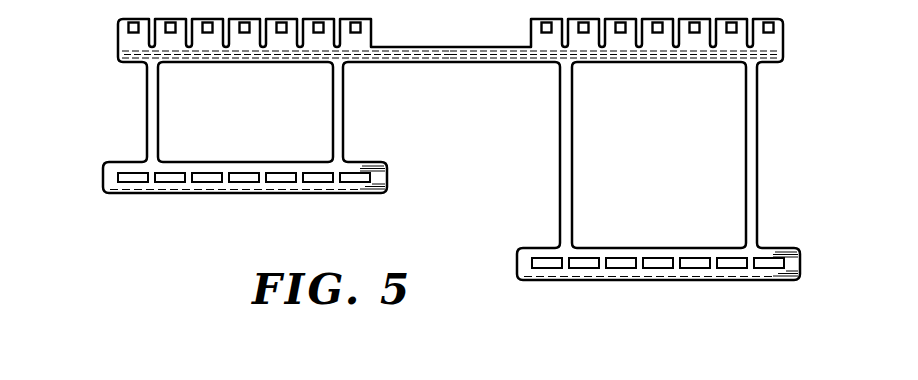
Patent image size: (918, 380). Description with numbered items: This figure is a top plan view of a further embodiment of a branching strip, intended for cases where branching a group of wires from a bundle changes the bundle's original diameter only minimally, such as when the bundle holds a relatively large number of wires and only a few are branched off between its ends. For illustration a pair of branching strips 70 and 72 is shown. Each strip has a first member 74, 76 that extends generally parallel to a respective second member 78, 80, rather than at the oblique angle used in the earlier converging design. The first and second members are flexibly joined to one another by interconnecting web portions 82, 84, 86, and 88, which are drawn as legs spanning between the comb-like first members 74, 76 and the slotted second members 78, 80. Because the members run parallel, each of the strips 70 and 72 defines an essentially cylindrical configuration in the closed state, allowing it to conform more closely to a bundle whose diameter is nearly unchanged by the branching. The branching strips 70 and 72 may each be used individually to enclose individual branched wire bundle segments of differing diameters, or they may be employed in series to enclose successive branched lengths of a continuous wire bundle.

The branching strip 70 is at (233, 262).
The branching strip 72 is at (640, 351).
The first member 74 is at (118, 37).
The first member 76 is at (783, 40).
The second member 78 is at (117, 194).
The second member 80 is at (750, 282).
The web portion 82 is at (158, 95).
The web portion 84 is at (343, 115).
The web portion 86 is at (572, 186).
The web portion 88 is at (757, 158).